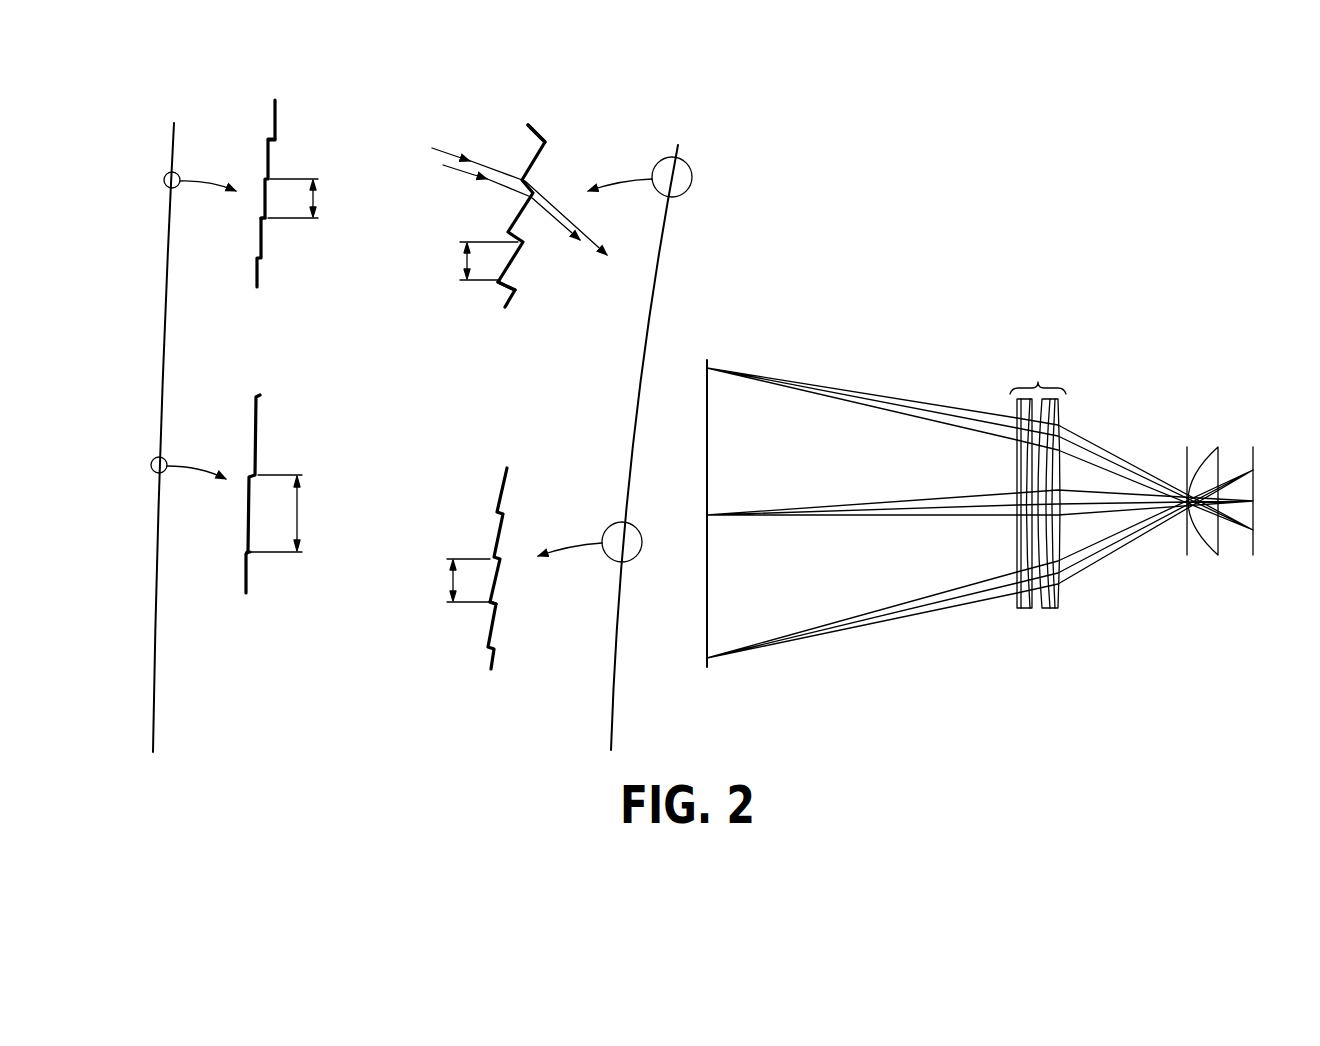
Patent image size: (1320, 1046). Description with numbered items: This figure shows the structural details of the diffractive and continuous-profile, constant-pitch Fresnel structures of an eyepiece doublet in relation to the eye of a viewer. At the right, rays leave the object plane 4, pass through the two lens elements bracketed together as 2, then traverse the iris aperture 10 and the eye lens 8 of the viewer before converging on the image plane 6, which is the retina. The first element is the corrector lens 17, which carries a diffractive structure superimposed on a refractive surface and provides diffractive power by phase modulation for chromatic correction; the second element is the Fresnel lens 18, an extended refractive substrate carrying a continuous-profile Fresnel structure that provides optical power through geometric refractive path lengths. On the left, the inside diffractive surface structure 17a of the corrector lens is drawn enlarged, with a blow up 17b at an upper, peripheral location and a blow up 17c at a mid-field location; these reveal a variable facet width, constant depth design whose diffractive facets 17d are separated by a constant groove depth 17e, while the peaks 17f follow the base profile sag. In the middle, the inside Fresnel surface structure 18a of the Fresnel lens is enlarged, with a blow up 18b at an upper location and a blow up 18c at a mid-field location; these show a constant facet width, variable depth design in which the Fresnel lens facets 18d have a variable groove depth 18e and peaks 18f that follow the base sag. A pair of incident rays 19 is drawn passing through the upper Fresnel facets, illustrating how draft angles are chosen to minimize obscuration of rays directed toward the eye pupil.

The diffractive optical element unit 2 is at (1035, 512).
The object plane 4 is at (707, 360).
The image plane 6 is at (1254, 447).
The eye lens 8 is at (1209, 447).
The iris aperture 10 is at (1186, 555).
The corrector lens 17 is at (1022, 608).
The Fresnel lens 18 is at (1048, 608).
The diffractive surface structure 17a is at (166, 313).
The blow up at upper location 17b is at (275, 100).
The blow up at midfield location 17c is at (258, 395).
The diffractive facets 17d is at (320, 200).
The groove depth 17e is at (266, 221).
The peaks 17f is at (276, 140).
The Fresnel surface structure 18a is at (658, 258).
The blow up at upper location 18b is at (528, 125).
The blow up at mid-field location 18c is at (507, 468).
The Fresnel lens facets 18d is at (462, 261).
The groove depth 18e is at (505, 300).
The peaks 18f is at (528, 130).
The light beam 19 is at (458, 178).